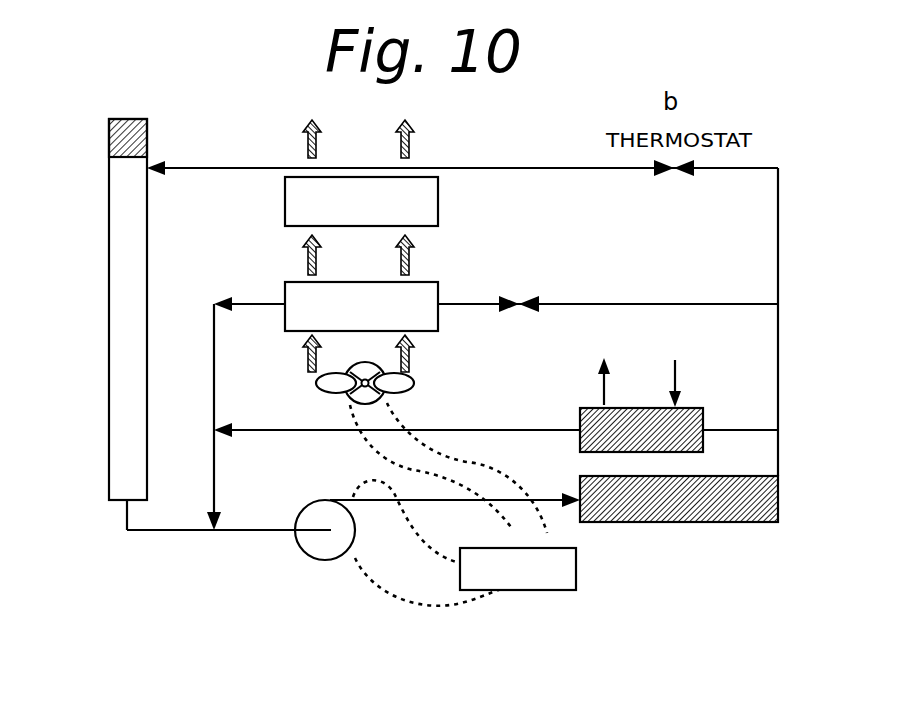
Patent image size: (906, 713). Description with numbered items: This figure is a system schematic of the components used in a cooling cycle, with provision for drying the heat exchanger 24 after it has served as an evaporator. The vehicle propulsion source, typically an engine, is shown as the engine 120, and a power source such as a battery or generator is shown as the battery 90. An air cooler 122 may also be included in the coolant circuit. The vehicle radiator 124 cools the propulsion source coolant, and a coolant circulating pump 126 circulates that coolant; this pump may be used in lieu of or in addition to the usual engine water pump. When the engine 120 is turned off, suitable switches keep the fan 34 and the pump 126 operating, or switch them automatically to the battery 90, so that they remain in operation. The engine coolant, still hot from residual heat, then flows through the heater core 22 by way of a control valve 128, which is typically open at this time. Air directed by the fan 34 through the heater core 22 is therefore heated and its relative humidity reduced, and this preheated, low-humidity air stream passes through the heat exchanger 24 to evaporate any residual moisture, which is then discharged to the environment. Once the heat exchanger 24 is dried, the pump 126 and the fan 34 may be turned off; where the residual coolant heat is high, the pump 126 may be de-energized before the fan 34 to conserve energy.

The heat exchanger 24 is at (425, 208).
The heater core 22 is at (432, 311).
The fan 34 is at (346, 394).
The control valve 128 is at (520, 302).
The air cooler 122 is at (690, 407).
The vehicle propulsion source 120 is at (683, 510).
The vehicle radiator 124 is at (128, 402).
The coolant circulating pump 126 is at (336, 528).
The power source 90 is at (553, 567).